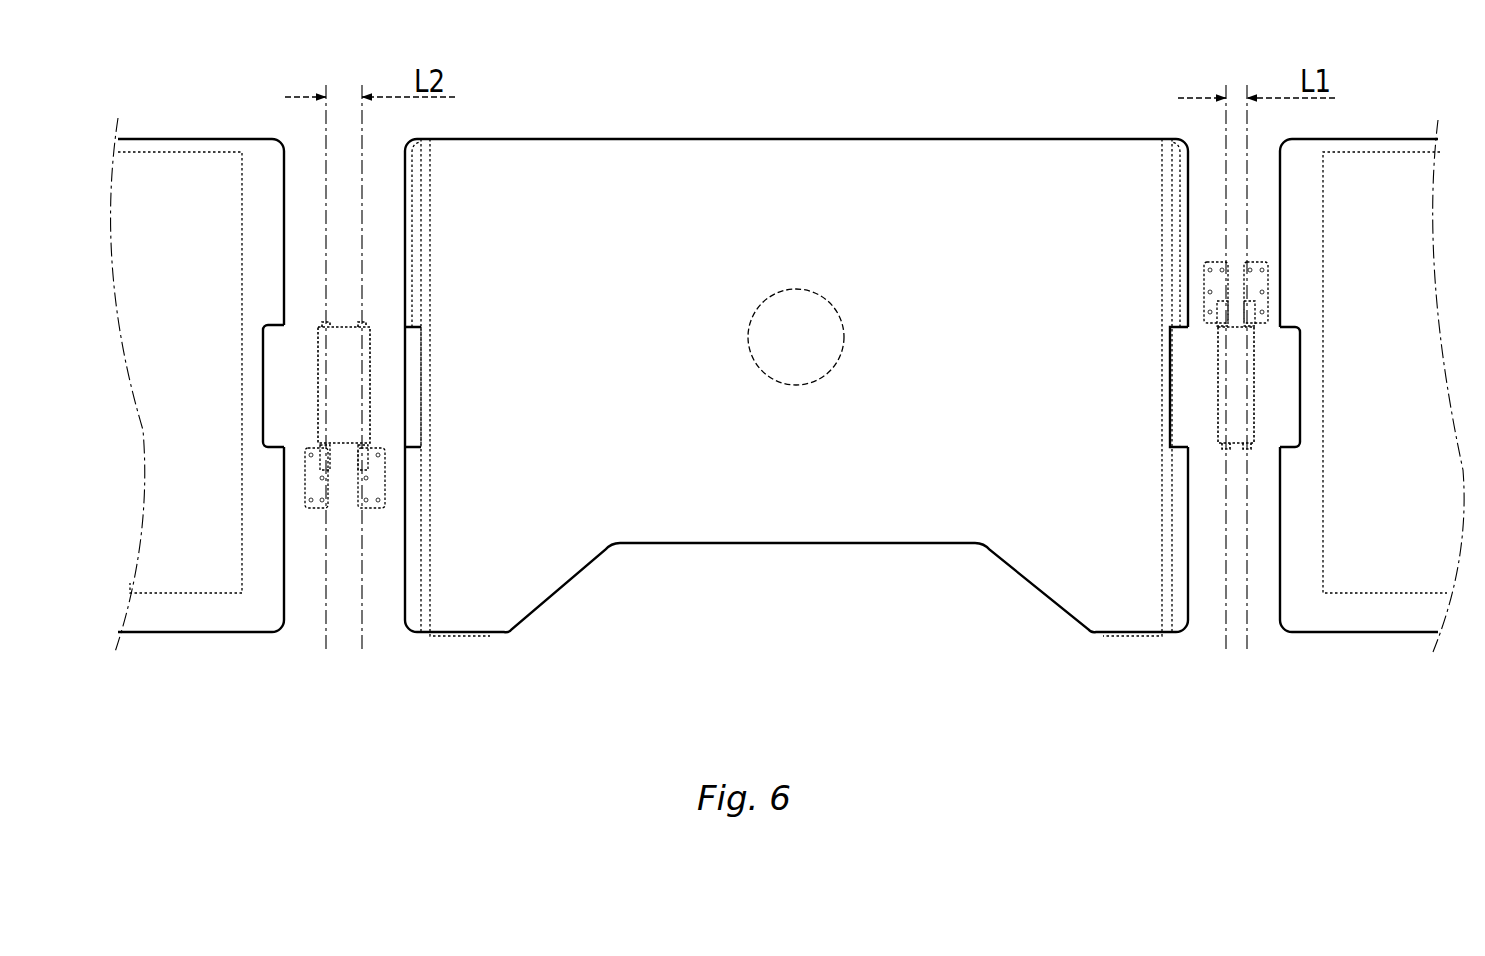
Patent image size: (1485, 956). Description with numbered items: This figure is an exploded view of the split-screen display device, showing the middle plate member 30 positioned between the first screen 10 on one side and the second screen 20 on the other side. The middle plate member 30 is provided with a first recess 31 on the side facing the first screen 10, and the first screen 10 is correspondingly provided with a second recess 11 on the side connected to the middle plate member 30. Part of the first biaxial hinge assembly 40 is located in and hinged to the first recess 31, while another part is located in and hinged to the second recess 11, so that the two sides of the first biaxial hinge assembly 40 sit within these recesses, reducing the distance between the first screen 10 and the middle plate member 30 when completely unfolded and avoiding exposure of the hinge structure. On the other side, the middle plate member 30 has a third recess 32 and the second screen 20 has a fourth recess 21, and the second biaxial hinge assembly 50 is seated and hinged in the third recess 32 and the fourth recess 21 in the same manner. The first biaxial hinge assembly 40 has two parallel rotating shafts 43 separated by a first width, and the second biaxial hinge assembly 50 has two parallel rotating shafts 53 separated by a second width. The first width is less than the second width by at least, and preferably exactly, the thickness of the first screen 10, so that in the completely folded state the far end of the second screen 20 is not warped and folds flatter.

The first screen 10 is at (1364, 134).
The second recess 11 is at (1295, 383).
The second screen 20 is at (193, 134).
The fourth recess 21 is at (271, 365).
The middle plate member 30 is at (860, 134).
The first recess 31 is at (1170, 373).
The third recess 32 is at (424, 372).
The first biaxial hinge assembly 40 is at (1229, 410).
The rotating shafts 43 is at (1243, 319).
The second biaxial hinge assembly 50 is at (356, 411).
The rotating shafts 53 is at (357, 449).